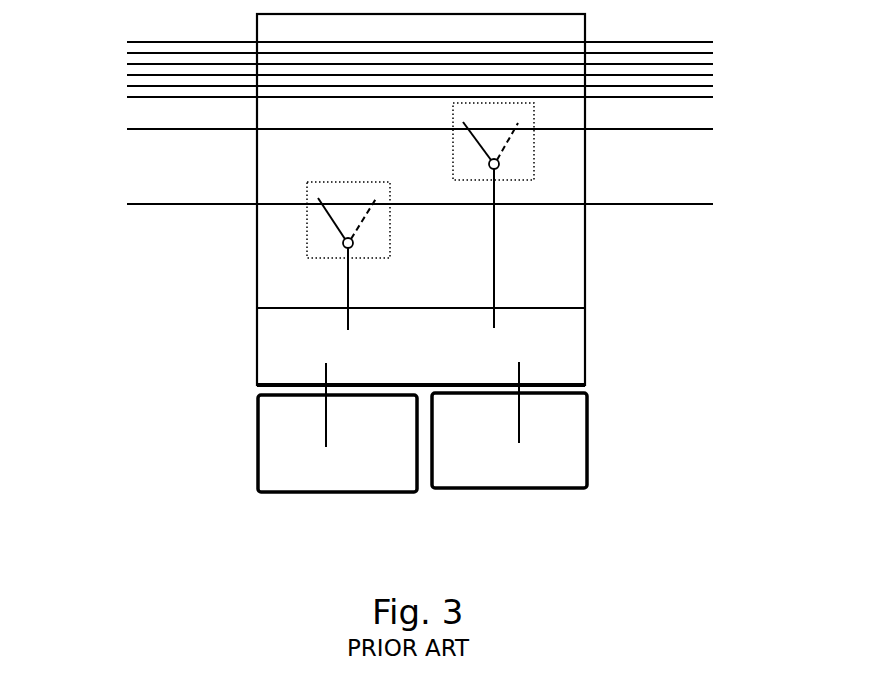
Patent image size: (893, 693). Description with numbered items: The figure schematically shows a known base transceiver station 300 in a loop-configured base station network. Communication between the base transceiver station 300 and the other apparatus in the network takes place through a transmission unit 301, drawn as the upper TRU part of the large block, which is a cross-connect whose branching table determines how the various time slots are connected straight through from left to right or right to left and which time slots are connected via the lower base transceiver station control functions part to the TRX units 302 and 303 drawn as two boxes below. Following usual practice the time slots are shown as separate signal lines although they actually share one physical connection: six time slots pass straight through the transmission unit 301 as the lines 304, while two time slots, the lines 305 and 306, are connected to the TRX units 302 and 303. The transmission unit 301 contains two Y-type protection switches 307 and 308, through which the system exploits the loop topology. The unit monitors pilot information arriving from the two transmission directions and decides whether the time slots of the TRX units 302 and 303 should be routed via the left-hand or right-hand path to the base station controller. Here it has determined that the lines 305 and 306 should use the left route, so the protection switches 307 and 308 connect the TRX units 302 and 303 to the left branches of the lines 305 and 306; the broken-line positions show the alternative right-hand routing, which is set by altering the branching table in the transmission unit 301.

The base transceiver station 300 is at (166, 365).
The transmission unit 301 is at (557, 278).
The TRX unit 302 is at (270, 445).
The TRX unit 303 is at (575, 442).
The lines 304 is at (110, 32).
The line 305 is at (145, 130).
The line 306 is at (145, 204).
The Y-type protection switch 307 is at (307, 250).
The Y-type protection switch 308 is at (535, 162).